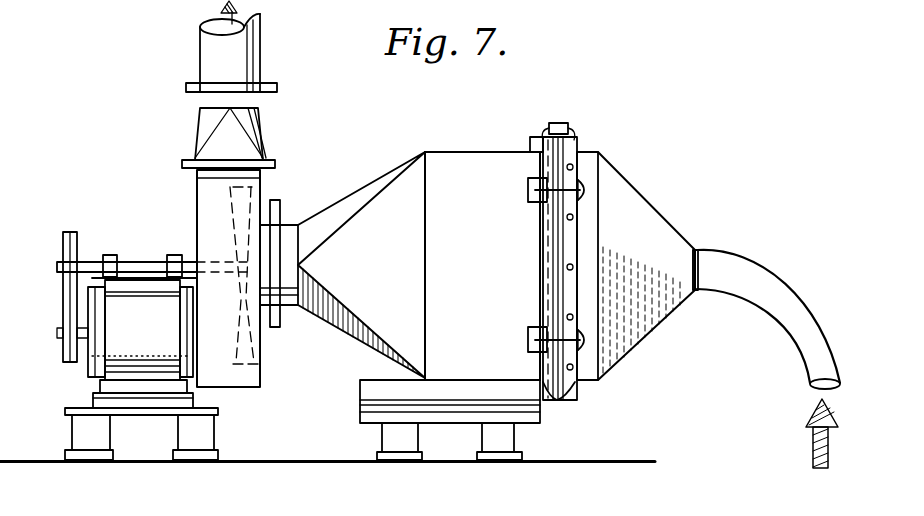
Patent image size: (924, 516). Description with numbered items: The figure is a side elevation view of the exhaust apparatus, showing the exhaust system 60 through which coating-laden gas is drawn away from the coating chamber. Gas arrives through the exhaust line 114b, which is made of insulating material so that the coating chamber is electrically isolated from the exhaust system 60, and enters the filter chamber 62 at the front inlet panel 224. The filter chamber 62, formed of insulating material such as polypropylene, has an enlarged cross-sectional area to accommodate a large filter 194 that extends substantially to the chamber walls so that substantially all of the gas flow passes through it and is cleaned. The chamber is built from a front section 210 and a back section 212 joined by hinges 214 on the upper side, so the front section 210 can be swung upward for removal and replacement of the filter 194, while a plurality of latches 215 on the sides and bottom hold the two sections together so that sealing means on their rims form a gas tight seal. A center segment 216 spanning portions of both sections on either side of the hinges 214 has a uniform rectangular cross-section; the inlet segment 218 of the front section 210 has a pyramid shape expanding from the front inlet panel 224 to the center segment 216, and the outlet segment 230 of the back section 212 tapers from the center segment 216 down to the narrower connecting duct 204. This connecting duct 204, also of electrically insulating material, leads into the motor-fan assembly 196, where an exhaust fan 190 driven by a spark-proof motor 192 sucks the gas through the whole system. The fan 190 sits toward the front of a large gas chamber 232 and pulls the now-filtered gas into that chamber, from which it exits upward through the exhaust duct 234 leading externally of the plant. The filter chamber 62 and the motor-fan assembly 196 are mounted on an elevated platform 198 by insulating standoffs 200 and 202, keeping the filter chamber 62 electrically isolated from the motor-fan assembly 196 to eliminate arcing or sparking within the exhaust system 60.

The exhaust system 60 is at (313, 177).
The filter chamber 62 is at (490, 139).
The exhaust line 114b is at (797, 252).
The exhaust fan 190 is at (250, 364).
The motor 192 is at (165, 344).
The filter 194 is at (547, 232).
The motor-fan assembly 196 is at (170, 242).
The deck / base surface 198 is at (270, 463).
The insulating standoff 200 is at (525, 445).
The insulating standoff 202 is at (215, 438).
The connecting duct 204 is at (290, 308).
The front section 210 is at (690, 192).
The back section 212 is at (468, 120).
The hinge 214 is at (562, 128).
The latch 215 is at (532, 332).
The center segment 216 is at (548, 390).
The inlet segment 218 is at (657, 325).
The front inlet panel 224 is at (700, 251).
The outlet segment 230 is at (400, 282).
The gas chamber 232 is at (243, 388).
The exhaust duct 234 is at (268, 45).